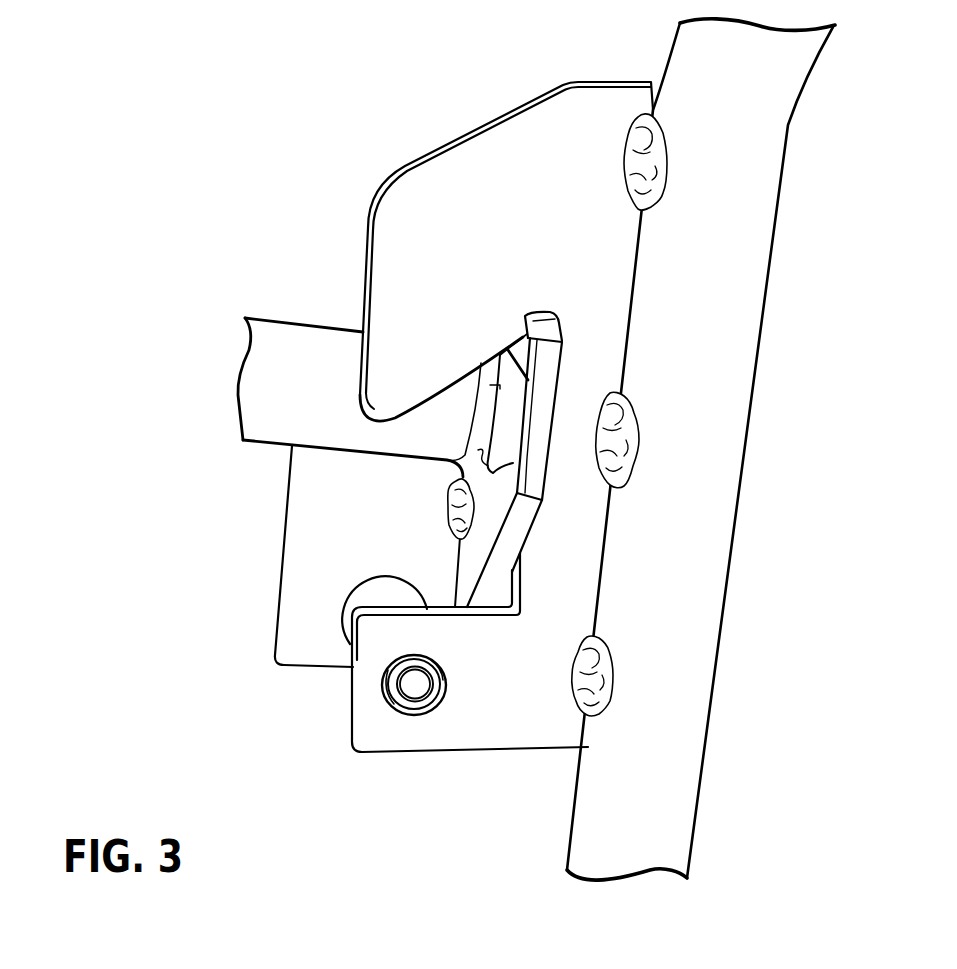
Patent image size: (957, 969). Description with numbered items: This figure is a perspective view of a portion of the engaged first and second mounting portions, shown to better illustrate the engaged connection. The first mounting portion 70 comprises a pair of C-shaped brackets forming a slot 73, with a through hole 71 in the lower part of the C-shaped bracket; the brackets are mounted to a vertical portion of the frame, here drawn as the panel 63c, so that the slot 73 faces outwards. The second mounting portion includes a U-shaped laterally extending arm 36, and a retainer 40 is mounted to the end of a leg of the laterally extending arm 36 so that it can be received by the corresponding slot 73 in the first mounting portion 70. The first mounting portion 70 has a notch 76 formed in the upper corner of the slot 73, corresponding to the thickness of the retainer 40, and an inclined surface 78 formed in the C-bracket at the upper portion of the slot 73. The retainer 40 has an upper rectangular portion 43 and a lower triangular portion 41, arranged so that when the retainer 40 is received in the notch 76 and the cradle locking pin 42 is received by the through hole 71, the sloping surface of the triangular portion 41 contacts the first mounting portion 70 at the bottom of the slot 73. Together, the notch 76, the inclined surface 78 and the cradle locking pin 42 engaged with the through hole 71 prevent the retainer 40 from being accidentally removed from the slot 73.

The laterally extending arm 36 is at (302, 337).
The retainer 40 is at (477, 557).
The lower triangular portion 41 is at (505, 562).
The cradle locking pin 42 is at (362, 599).
The upper rectangular portion 43 is at (565, 381).
The pillar panel 63c is at (770, 205).
The first mounting portion 70 is at (445, 200).
The through hole 71 is at (397, 713).
The slot 73 is at (436, 508).
The notch 76 is at (523, 314).
The inclined surface 78 is at (435, 400).